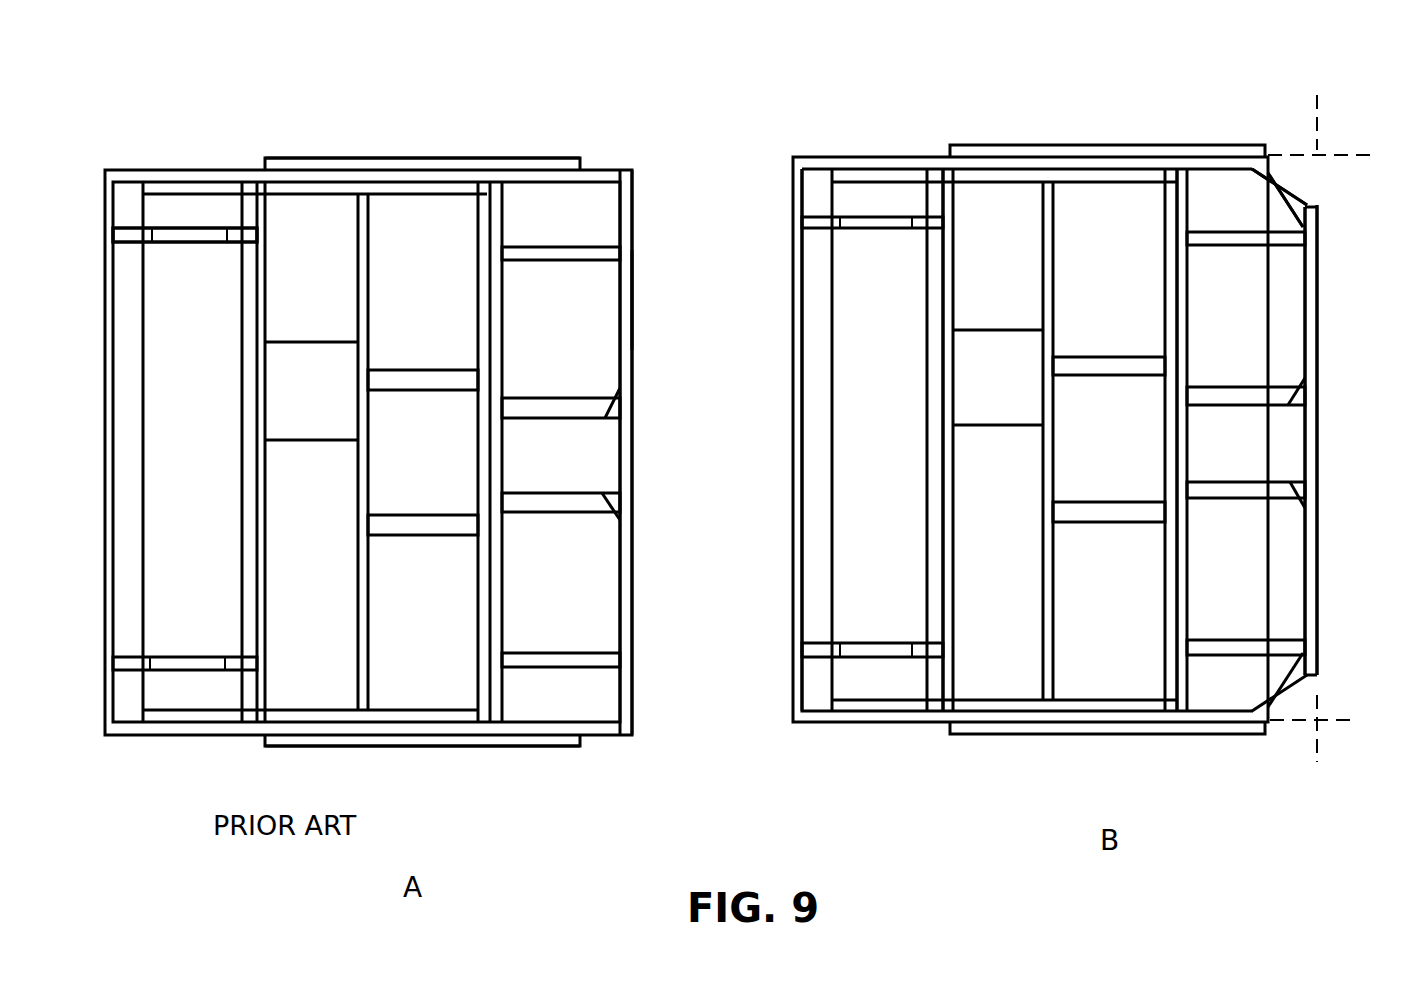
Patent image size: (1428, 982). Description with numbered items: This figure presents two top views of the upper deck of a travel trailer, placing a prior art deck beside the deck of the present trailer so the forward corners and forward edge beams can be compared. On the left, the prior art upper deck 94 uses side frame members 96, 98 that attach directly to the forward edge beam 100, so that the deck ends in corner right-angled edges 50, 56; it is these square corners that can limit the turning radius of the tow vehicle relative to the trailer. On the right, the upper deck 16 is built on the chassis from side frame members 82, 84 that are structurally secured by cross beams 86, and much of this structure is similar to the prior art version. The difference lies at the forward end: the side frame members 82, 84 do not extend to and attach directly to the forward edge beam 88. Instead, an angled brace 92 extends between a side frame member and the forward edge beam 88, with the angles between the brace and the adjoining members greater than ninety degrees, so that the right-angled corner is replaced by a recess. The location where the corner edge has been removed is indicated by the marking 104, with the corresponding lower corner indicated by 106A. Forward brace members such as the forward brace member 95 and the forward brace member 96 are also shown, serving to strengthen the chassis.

The corner right-angled edge 50 is at (640, 738).
The prior art upper deck 94 is at (312, 106).
The side frame member 96 is at (162, 180).
The corner right-angled edge 56 is at (640, 140).
The forward edge beam 100 is at (630, 303).
The side frame member 98 is at (597, 726).
The upper deck 16 is at (935, 86).
The side frame member 84 is at (1120, 148).
The side frame member 82 is at (1130, 712).
The removed corner edge 104 is at (1322, 148).
The axis line 106A is at (1318, 728).
The angled brace 92 is at (1284, 192).
The forward edge beam 88 is at (1310, 393).
The cross beam 86 is at (800, 440).
The forward brace member 95 is at (1237, 645).